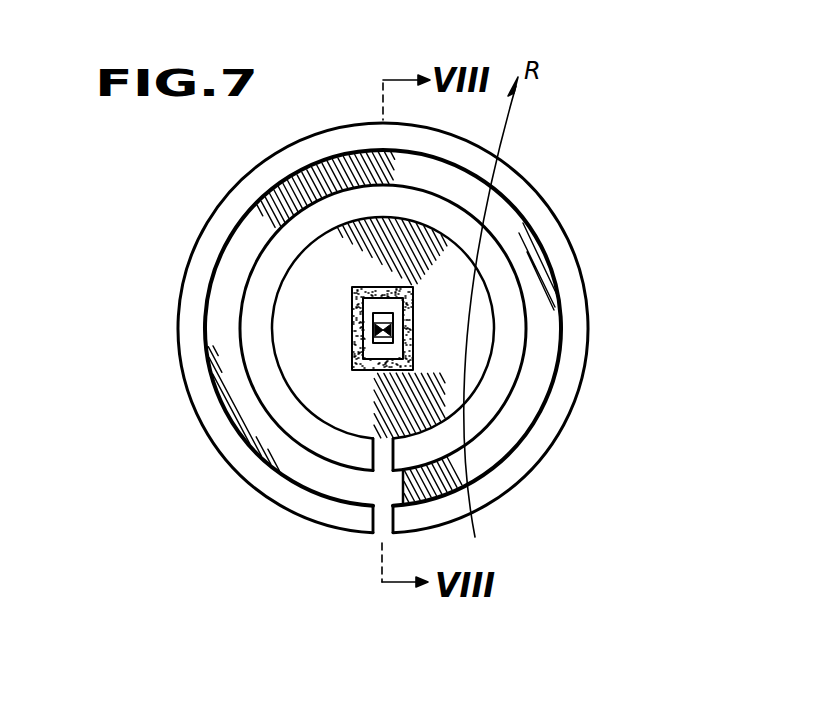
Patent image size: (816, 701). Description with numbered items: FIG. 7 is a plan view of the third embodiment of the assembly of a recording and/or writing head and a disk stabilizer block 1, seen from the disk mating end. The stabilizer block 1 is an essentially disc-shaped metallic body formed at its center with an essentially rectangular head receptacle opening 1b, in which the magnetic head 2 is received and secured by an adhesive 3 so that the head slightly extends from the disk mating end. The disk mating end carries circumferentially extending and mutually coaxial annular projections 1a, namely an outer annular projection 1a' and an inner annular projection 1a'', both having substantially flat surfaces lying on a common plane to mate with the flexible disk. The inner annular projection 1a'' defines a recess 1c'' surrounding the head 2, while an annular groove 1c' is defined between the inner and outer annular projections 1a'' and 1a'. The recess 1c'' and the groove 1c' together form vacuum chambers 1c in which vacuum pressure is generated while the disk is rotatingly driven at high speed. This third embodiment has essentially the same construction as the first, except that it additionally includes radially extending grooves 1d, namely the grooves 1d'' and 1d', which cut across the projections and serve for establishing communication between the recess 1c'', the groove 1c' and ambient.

The stabilizer block 1 is at (230, 463).
The annular projections 1a is at (452, 328).
The outer annular projection 1a' is at (508, 387).
The inner annular projection 1a'' is at (428, 327).
The head receptacle opening 1b is at (352, 358).
The vacuum chambers 1c is at (470, 328).
The annular groove 1c' is at (510, 395).
The recess 1c'' is at (463, 328).
The radially extending grooves 1d is at (324, 555).
The radially extending groove 1d' is at (349, 561).
The radially extending groove 1d'' is at (329, 508).
The magnetic head 2 is at (390, 332).
The adhesive 3 is at (352, 295).